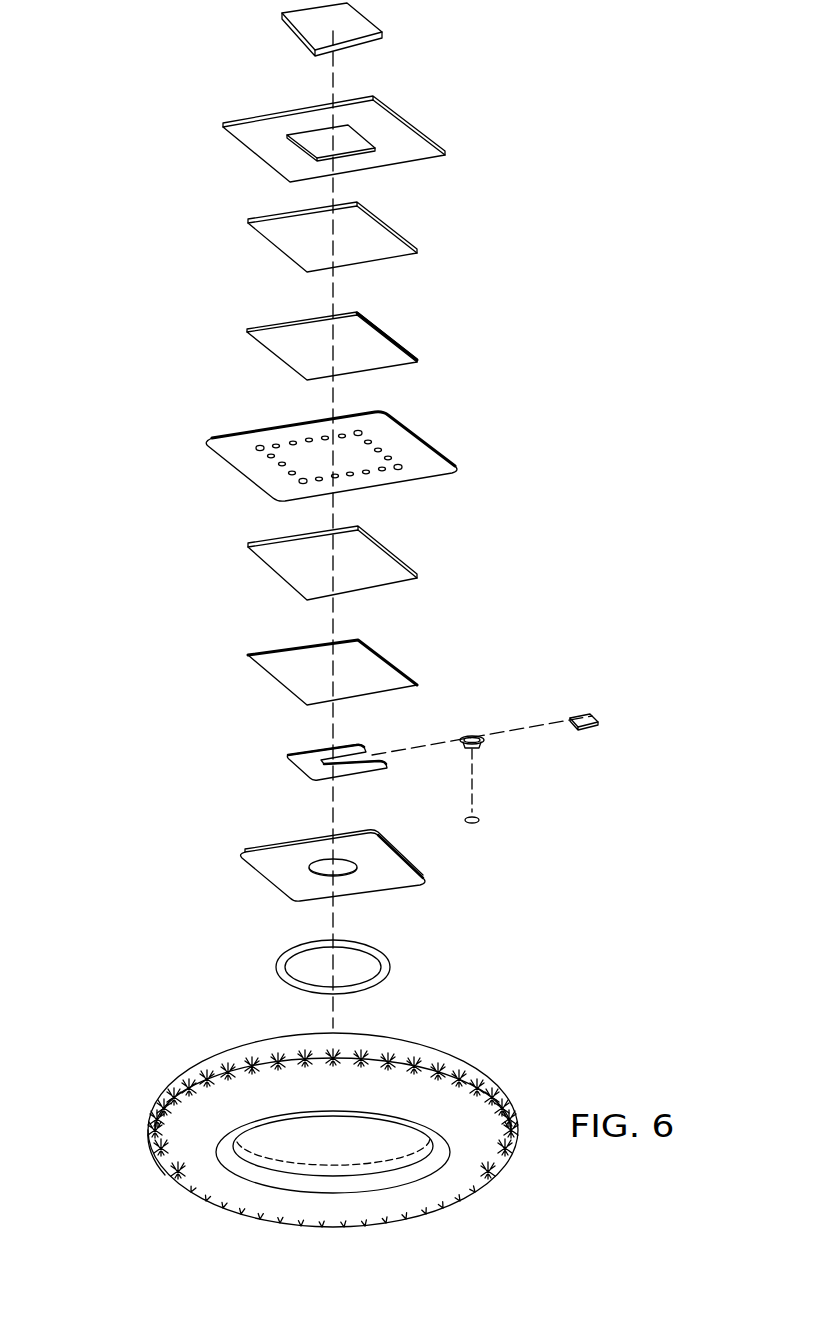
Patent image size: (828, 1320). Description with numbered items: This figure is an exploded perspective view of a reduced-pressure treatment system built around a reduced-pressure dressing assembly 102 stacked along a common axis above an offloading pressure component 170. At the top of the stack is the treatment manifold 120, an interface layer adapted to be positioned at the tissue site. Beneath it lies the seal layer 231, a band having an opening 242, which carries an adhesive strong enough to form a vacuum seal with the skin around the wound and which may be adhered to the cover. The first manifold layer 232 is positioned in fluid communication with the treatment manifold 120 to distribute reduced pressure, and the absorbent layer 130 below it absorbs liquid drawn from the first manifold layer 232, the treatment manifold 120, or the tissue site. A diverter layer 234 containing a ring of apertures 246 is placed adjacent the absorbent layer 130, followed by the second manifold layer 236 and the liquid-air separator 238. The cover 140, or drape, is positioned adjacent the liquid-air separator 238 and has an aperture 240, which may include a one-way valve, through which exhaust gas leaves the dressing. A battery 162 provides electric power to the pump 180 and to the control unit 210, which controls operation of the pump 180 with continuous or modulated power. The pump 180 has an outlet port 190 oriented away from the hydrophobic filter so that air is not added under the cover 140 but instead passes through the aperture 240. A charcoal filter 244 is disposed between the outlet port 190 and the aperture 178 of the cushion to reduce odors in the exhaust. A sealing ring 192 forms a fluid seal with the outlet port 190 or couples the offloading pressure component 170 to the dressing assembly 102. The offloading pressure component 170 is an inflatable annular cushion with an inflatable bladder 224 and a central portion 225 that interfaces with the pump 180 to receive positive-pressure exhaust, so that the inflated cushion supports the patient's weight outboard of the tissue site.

The reduced-pressure dressing assembly 102 is at (484, 424).
The treatment manifold 120 is at (298, 39).
The seal layer 231 is at (258, 147).
The opening 242 is at (365, 145).
The first manifold layer 232 is at (283, 242).
The absorbent layer 130 is at (283, 348).
The diverter layer 234 is at (248, 463).
The apertures 246 is at (383, 470).
The second manifold layer 236 is at (283, 570).
The liquid-air separator 238 is at (283, 675).
The battery 162 is at (305, 768).
The pump 180 is at (478, 745).
The outlet port 190 is at (463, 743).
The charcoal filter 244 is at (476, 824).
The control unit 210 is at (591, 730).
The cover 140 is at (275, 875).
The aperture 240 is at (348, 871).
The sealing ring 192 is at (278, 967).
The offloading pressure component 170 is at (212, 1060).
The inflatable bladder 224 is at (172, 1145).
The central portion 225 is at (370, 1125).
The aperture 178 is at (340, 1138).